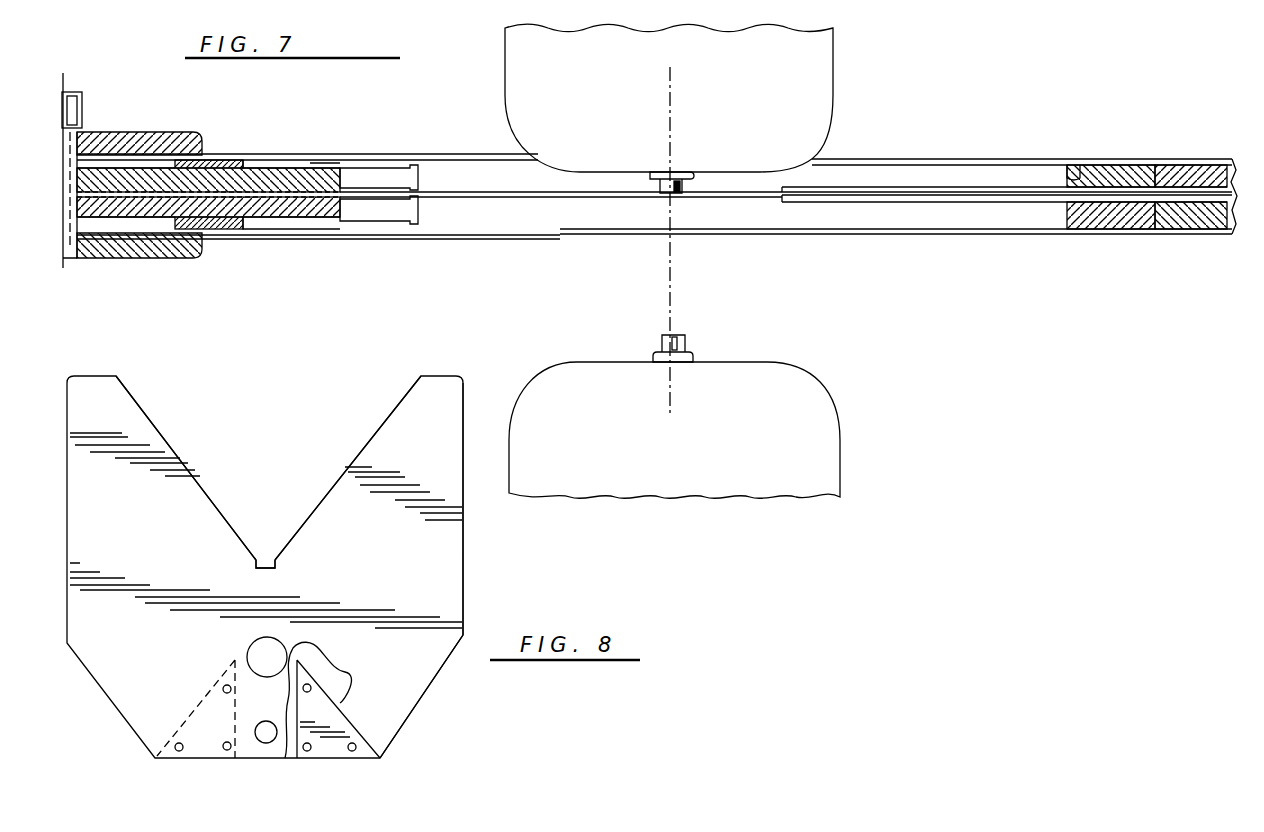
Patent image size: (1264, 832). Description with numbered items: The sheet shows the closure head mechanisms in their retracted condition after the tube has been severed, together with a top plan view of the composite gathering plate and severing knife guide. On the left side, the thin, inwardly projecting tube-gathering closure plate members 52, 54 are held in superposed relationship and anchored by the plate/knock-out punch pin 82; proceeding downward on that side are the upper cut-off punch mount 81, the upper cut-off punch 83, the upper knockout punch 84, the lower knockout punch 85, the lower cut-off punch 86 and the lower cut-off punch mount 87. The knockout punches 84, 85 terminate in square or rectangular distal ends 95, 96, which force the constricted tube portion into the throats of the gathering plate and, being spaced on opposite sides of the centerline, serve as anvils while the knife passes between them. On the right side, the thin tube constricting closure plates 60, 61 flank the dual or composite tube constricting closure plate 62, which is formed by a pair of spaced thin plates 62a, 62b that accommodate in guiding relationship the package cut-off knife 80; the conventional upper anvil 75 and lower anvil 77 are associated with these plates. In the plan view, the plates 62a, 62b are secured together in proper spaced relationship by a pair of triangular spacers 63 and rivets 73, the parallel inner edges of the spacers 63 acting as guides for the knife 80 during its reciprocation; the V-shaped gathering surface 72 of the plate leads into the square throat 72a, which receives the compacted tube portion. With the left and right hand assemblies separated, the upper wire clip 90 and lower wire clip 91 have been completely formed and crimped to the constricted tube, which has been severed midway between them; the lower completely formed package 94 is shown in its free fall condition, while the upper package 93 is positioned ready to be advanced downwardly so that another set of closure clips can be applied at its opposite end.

In FIG. 7, the tube-gathering closure plate member 52 is at (256, 156).
In FIG. 7, the tube-gathering closure plate member 54 is at (262, 240).
In FIG. 7, the tube constricting closure plate 60 is at (968, 159).
In FIG. 7, the tube constricting closure plate 61 is at (1000, 235).
In FIG. 7, the composite tube constricting closure plate 62 is at (1004, 205).
In FIG. 8, the composite tube constricting closure plate 62 is at (432, 376).
In FIG. 7, the upper plate of composite plate 62a is at (882, 186).
In FIG. 8, the upper plate of composite plate 62a is at (464, 560).
In FIG. 7, the lower plate of composite plate 62b is at (880, 204).
In FIG. 8, the lower plate of composite plate 62b is at (402, 728).
In FIG. 8, the triangular spacer 63 is at (198, 700).
In FIG. 8, the V-shaped guide surface 72 is at (367, 445).
In FIG. 8, the square throat 72a is at (268, 566).
In FIG. 8, the rivet 73 is at (224, 687).
In FIG. 7, the upper anvil 75 is at (1070, 168).
In FIG. 7, the lower anvil 77 is at (1070, 224).
In FIG. 7, the package cut-off knife 80 is at (1092, 186).
In FIG. 7, the upper cut-off punch mount 81 is at (152, 131).
In FIG. 7, the plate/knock-out punch pin 82 is at (84, 95).
In FIG. 7, the upper cut-off punch 83 is at (220, 158).
In FIG. 7, the upper knockout punch 84 is at (297, 167).
In FIG. 7, the lower knockout punch 85 is at (300, 231).
In FIG. 7, the lower cut-off punch 86 is at (286, 240).
In FIG. 7, the lower cut-off punch mount 87 is at (121, 259).
In FIG. 7, the upper wire clip 90 is at (694, 182).
In FIG. 7, the lower wire clip 91 is at (696, 357).
In FIG. 7, the upper package 93 is at (836, 64).
In FIG. 7, the lower package 94 is at (842, 416).
In FIG. 7, the distal end of upper knockout punch 95 is at (347, 180).
In FIG. 7, the distal end of lower knockout punch 96 is at (338, 202).